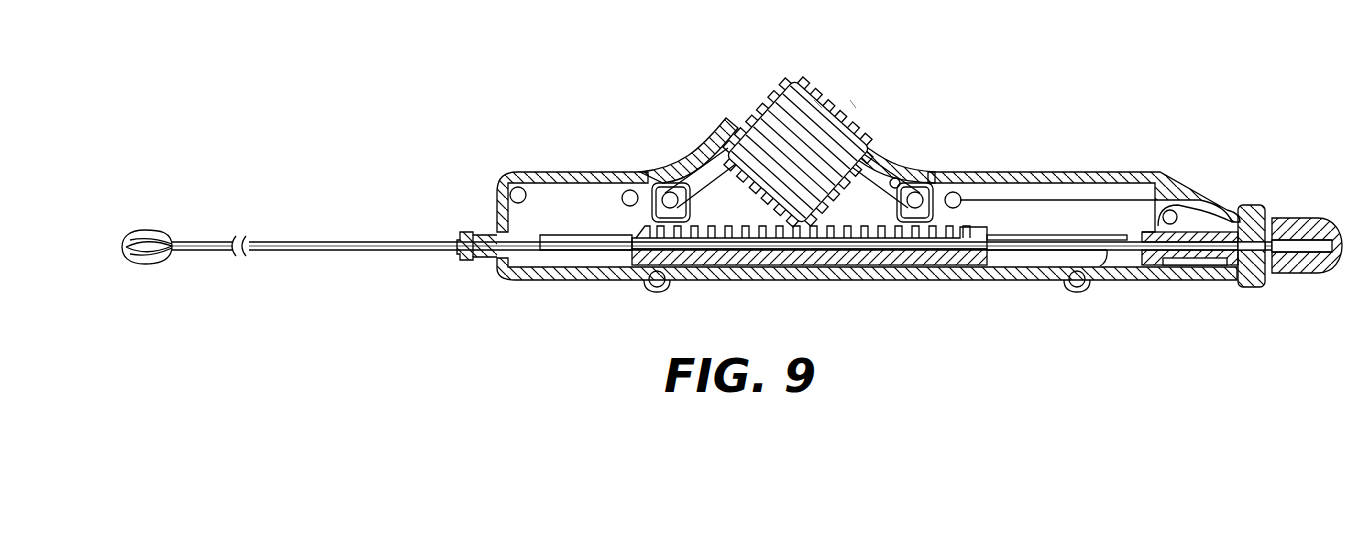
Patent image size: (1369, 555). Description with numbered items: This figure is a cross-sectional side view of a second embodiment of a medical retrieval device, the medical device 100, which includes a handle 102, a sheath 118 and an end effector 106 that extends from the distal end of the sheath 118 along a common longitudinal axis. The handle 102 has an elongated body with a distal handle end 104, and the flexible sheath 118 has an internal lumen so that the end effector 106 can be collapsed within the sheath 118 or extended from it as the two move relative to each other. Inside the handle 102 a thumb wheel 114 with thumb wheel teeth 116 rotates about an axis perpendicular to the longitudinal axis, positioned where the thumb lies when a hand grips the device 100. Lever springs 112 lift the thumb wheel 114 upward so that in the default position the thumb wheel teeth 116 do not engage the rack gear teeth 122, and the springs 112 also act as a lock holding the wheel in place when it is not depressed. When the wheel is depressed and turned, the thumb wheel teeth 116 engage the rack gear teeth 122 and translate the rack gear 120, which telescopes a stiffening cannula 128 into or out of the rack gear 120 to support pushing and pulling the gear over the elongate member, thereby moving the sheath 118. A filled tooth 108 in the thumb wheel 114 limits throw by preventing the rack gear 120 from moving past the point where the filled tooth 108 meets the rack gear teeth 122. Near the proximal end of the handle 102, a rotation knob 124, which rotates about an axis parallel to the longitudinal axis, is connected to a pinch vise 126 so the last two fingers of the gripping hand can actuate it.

The medical device 100 is at (513, 140).
The handle 102 is at (703, 136).
The distal handle end 104 is at (546, 282).
The end effector 106 is at (142, 233).
The filled tooth 108 is at (797, 76).
The lever spring 112 is at (688, 163).
The thumb wheel 114 is at (818, 105).
The thumb wheel teeth 116 is at (852, 104).
The sheath 118 is at (354, 241).
The rack gear 120 is at (770, 264).
The rack gear teeth 122 is at (892, 244).
The rotation knob 124 is at (1252, 206).
The pinch vise 126 is at (1312, 218).
The stiffening cannula 128 is at (1107, 250).